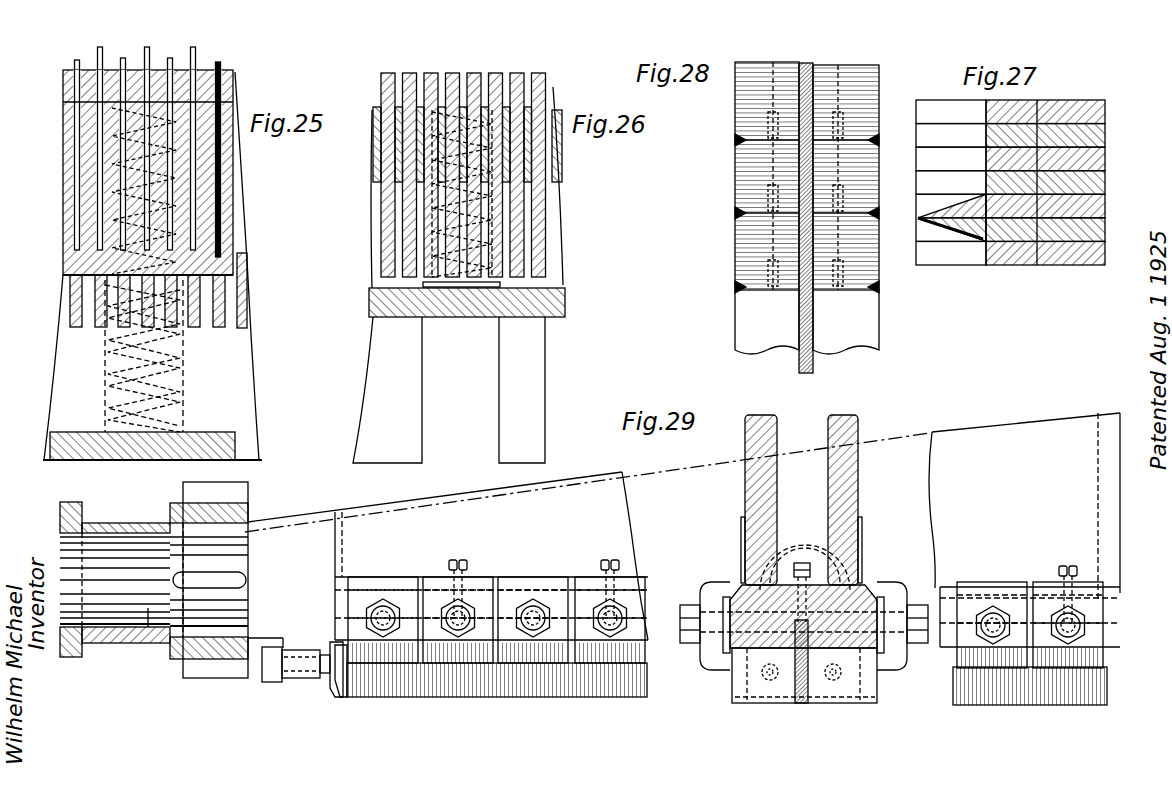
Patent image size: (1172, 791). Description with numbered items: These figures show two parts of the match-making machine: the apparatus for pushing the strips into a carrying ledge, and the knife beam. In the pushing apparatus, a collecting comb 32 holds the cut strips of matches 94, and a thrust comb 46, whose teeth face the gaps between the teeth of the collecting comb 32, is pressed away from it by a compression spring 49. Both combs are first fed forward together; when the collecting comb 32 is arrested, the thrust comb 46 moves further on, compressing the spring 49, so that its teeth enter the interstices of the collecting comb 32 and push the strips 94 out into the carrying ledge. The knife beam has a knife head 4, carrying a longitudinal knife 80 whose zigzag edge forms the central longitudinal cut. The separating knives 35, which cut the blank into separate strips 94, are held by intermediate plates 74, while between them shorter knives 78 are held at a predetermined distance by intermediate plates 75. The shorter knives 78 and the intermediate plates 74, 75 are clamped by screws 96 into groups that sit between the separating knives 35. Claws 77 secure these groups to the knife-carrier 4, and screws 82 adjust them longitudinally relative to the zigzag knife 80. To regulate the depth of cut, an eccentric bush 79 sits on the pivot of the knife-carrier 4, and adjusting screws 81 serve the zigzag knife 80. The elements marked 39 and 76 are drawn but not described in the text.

In FIG. 28, the knife head 4 is at (736, 325).
In FIG. 29, the knife head 4 is at (855, 490).
In FIG. 25, the collecting comb 32 is at (232, 200).
In FIG. 26, the collecting comb 32 is at (548, 88).
In FIG. 28, the knives 35 is at (746, 147).
In FIG. 27, the knives 35 is at (918, 218).
In FIG. 29, the knives 35 is at (642, 697).
In FIG. 29, the gear 39 is at (250, 508).
In FIG. 25, the thrust comb 46 is at (247, 288).
In FIG. 26, the thrust comb 46 is at (566, 163).
In FIG. 25, the compression spring 49 is at (185, 350).
In FIG. 26, the compression spring 49 is at (512, 233).
In FIG. 28, the intermediate plates 74 is at (745, 218).
In FIG. 27, the intermediate plates 74 is at (962, 232).
In FIG. 29, the intermediate plates 74 is at (640, 688).
In FIG. 28, the intermediate plates 75 is at (755, 245).
In FIG. 27, the intermediate plates 75 is at (1050, 102).
In FIG. 29, the intermediate plates 75 is at (633, 680).
In FIG. 29, the hub bore 76 is at (143, 650).
In FIG. 29, the claws 77 is at (550, 580).
In FIG. 28, the shorter knives 78 is at (760, 78).
In FIG. 27, the shorter knives 78 is at (1085, 102).
In FIG. 29, the shorter knives 78 is at (589, 690).
In FIG. 29, the eccentric bush 79 is at (113, 648).
In FIG. 28, the longitudinal knife 80 is at (813, 372).
In FIG. 29, the longitudinal knife 80 is at (805, 703).
In FIG. 29, the adjusting screws 81 is at (468, 560).
In FIG. 29, the screws 82 is at (268, 682).
In FIG. 25, the strips of matches 94 is at (198, 50).
In FIG. 28, the screws 96 is at (784, 62).
In FIG. 29, the screws 96 is at (742, 673).